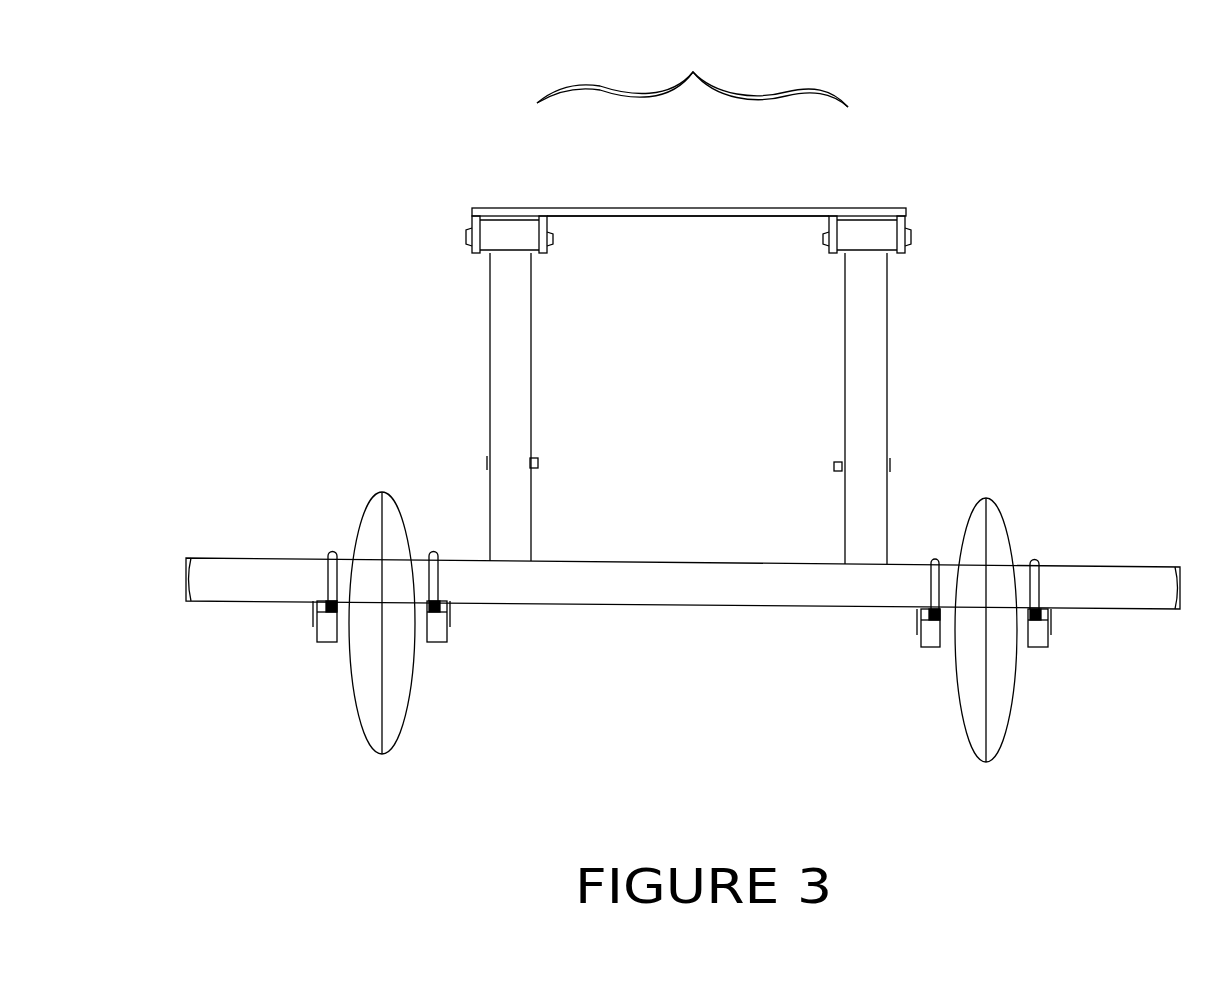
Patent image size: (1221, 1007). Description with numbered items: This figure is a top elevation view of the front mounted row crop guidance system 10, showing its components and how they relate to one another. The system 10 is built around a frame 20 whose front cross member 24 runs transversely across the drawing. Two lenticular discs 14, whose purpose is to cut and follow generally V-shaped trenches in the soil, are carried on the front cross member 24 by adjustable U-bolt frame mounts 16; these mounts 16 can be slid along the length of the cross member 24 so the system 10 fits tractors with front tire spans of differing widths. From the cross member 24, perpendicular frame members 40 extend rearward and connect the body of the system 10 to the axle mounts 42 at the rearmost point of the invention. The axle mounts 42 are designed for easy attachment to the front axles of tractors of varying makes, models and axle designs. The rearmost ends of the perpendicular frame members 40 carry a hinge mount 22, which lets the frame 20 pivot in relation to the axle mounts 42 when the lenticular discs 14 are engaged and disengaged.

The front mounted row crop guidance system 10 is at (609, 168).
The lenticular discs 14 is at (913, 700).
The adjustable U-bolt frame mounts 16 is at (423, 469).
The frame 20 is at (692, 64).
The hinge mount 22 is at (785, 193).
The front cross member 24 is at (703, 511).
The perpendicular frame members 40 is at (675, 401).
The axle mount 42 is at (693, 258).